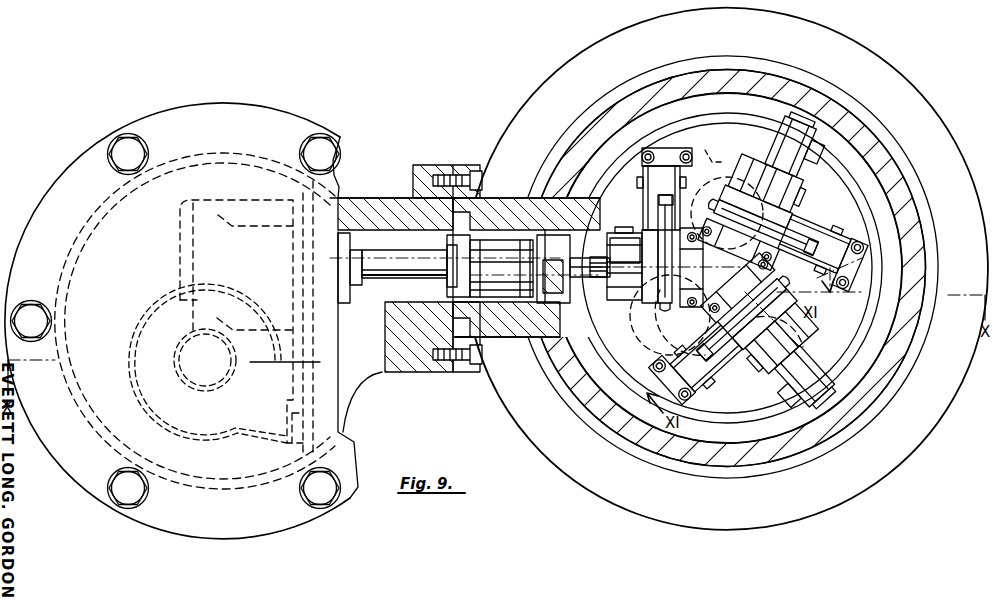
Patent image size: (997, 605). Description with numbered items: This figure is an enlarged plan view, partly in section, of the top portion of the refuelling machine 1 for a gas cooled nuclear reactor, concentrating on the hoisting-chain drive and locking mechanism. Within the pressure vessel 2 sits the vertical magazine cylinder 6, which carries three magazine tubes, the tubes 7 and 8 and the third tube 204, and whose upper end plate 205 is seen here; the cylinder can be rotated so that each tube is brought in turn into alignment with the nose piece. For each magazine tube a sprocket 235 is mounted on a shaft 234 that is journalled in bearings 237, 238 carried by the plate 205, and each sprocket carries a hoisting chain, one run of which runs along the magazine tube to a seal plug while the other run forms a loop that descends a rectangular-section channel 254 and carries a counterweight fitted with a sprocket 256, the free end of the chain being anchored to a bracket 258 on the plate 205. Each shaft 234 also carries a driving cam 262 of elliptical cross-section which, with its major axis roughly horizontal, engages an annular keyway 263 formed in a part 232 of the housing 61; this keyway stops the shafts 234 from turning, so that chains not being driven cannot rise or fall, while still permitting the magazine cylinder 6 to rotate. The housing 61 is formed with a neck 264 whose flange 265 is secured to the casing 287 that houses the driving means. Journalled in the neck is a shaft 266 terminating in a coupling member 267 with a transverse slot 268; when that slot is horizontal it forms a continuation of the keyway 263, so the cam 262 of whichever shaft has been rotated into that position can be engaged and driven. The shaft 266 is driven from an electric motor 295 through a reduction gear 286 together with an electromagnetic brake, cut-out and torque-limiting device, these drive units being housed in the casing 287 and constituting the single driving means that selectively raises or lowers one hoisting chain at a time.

The refuelling machine 1 is at (860, 232).
The pressure vessel 2 is at (655, 33).
The magazine cylinder 6 is at (858, 322).
The magazine tube 7 is at (648, 338).
The magazine tube 8 is at (716, 158).
The housing 61 is at (660, 78).
The magazine tube 204 is at (728, 335).
The upper end plate 205 is at (745, 408).
The part of the casing 232 is at (612, 410).
The shaft 234 is at (790, 138).
The sprocket 235 is at (716, 258).
The bearing 237 is at (622, 232).
The bearing 238 is at (728, 275).
The channel 254 is at (656, 195).
The sprocket 256 is at (672, 215).
The bracket 258 is at (672, 160).
The driving cam 262 is at (650, 262).
The annular keyway 263 is at (862, 178).
The neck 264 is at (520, 328).
The flange 265 is at (475, 372).
The shaft 266 is at (388, 266).
The coupling member 267 is at (623, 249).
The transverse slot 268 is at (560, 292).
The reduction gear 286 is at (182, 231).
The casing 287 is at (63, 265).
The electric motor 295 is at (175, 415).